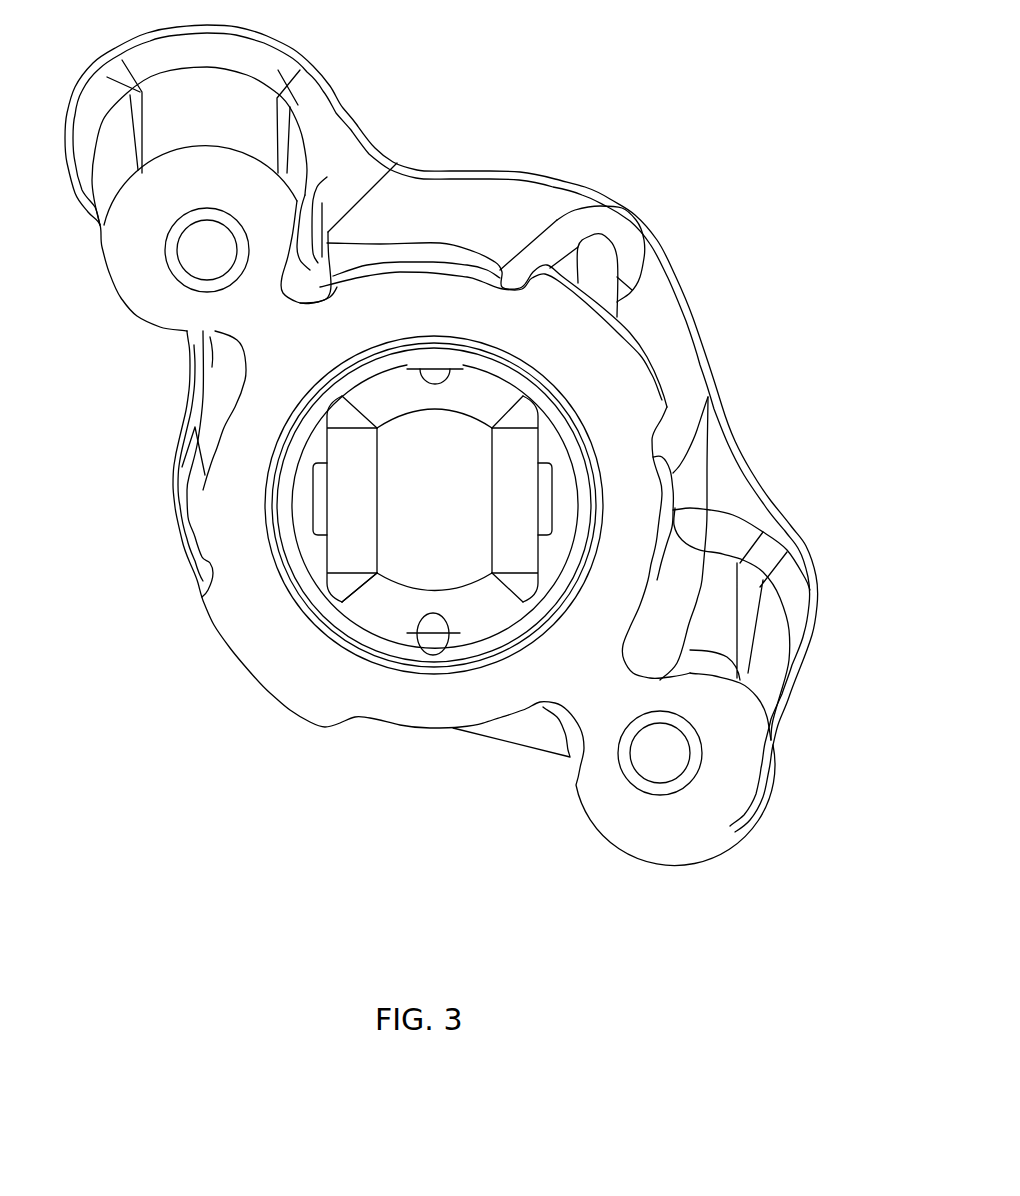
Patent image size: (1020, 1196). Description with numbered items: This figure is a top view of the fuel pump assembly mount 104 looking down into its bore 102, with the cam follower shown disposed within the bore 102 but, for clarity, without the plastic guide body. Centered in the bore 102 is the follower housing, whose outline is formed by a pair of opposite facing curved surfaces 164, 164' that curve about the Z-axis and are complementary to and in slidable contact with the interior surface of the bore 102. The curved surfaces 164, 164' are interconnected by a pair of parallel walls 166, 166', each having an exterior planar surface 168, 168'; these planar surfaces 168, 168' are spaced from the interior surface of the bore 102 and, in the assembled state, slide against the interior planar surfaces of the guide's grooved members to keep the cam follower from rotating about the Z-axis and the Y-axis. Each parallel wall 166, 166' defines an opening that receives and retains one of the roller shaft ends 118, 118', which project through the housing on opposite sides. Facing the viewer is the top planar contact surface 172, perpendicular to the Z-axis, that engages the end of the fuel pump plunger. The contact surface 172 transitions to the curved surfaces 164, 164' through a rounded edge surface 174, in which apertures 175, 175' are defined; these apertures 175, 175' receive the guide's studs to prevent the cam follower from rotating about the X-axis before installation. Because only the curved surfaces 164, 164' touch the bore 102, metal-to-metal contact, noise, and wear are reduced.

The bore 102 is at (593, 455).
The fuel pump assembly mount 104 is at (650, 326).
The roller shaft end 118 is at (683, 496).
The roller shaft end 118' is at (211, 496).
The curved surface 164 is at (456, 711).
The curved surface 164' is at (414, 219).
The parallel wall 166 is at (581, 485).
The exterior planar surface 168 is at (626, 471).
The parallel wall 166' is at (217, 494).
The exterior planar surface 168' is at (315, 494).
The top planar contact surface 172 is at (440, 513).
The rounded edge surface 174 is at (403, 603).
The aperture 175 is at (406, 720).
The aperture 175' is at (485, 231).